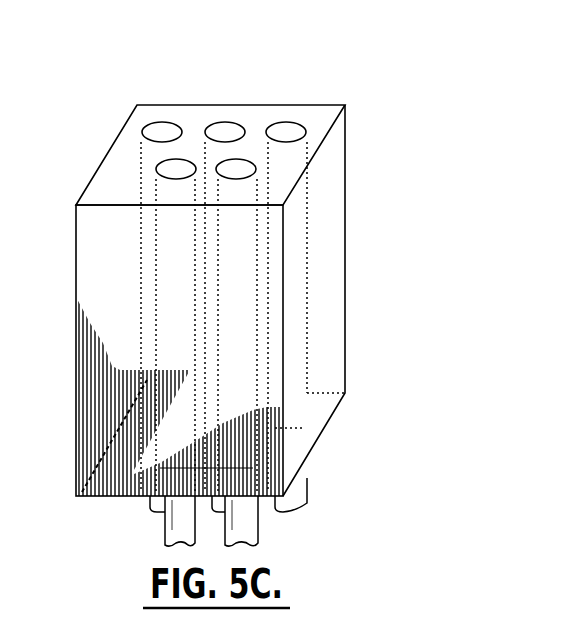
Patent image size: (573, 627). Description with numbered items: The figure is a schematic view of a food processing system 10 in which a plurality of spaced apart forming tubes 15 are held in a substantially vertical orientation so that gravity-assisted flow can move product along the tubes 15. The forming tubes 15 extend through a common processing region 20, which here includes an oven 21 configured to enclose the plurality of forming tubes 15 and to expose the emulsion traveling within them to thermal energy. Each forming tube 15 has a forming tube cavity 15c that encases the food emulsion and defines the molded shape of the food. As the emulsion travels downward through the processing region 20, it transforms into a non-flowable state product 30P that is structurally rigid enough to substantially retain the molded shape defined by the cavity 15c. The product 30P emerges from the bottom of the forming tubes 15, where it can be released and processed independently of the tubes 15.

The connector assembly 10 is at (204, 288).
The forming tube 15 is at (280, 130).
The oven 21 is at (319, 105).
The forming tube cavity 15c is at (293, 132).
The processing region 20 is at (62, 339).
The non-flowable state product 30P is at (250, 532).